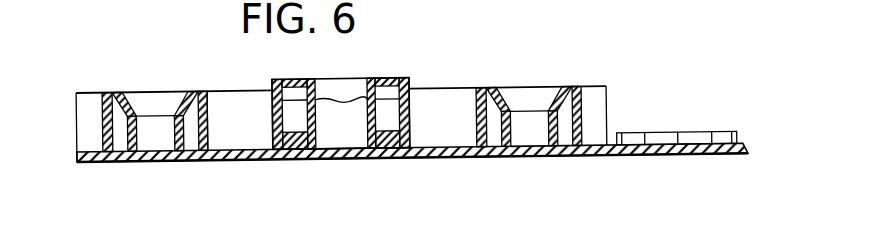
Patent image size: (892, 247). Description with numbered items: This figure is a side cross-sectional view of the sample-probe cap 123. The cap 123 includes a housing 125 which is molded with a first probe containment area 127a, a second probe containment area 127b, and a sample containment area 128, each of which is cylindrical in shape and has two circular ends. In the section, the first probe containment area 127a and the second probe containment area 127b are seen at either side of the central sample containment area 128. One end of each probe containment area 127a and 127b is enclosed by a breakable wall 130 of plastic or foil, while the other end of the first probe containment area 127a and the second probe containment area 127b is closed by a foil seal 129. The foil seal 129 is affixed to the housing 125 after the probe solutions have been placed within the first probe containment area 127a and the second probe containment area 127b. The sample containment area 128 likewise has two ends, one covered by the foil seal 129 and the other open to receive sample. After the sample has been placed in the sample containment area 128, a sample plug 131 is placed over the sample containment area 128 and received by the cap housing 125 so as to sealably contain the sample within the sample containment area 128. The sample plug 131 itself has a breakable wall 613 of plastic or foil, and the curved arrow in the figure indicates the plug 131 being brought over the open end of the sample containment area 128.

The cap 123 is at (432, 162).
The housing 125 is at (77, 156).
The first probe containment area 127a is at (535, 143).
The second probe containment area 127b is at (158, 140).
The sample containment area 128 is at (343, 117).
The foil seal 129 is at (163, 163).
The breakable wall 130 is at (163, 92).
The sample plug 131 is at (372, 68).
The breakable wall of plastic or foil 613 is at (323, 82).